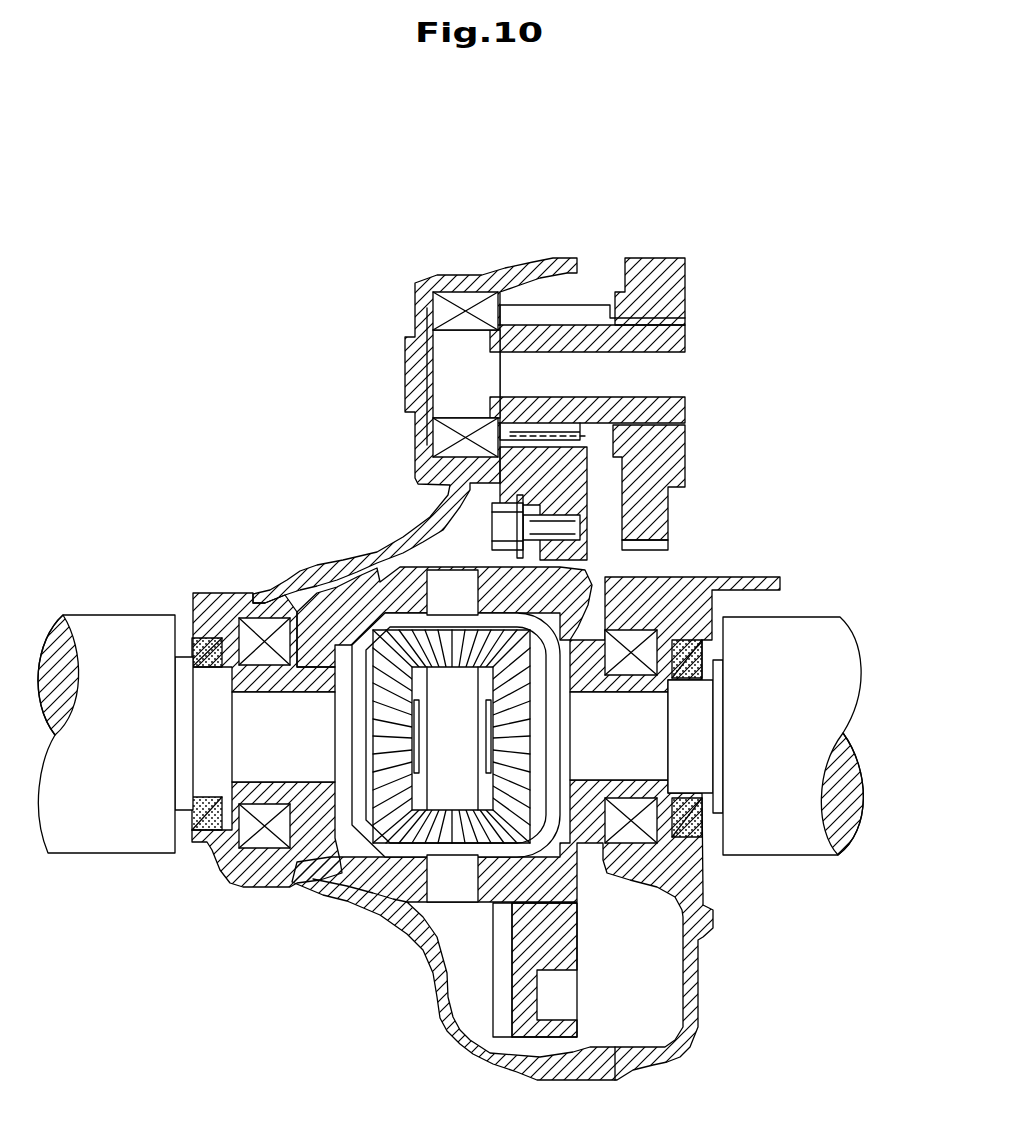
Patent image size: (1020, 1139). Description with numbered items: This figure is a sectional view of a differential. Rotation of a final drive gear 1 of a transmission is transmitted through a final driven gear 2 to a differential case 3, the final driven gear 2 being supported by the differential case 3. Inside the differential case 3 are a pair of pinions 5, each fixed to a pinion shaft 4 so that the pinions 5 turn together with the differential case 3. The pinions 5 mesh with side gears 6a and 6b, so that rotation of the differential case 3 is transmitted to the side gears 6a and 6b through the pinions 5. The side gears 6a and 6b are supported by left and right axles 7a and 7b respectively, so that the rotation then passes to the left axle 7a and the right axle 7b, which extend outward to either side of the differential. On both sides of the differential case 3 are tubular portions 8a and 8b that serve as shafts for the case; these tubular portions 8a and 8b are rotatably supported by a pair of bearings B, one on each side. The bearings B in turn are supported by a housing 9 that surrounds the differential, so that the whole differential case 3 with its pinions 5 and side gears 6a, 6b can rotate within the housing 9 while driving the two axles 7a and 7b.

The final drive gear 1 is at (543, 313).
The final driven gear 2 is at (410, 467).
The differential case 3 is at (400, 577).
The pinion shaft 4 is at (447, 888).
The pinion 5 is at (397, 620).
The side gear 6a is at (295, 850).
The side gear 6b is at (565, 835).
The left axle 7a is at (105, 630).
The right axle 7b is at (820, 630).
The tubular portion 8a is at (262, 677).
The tubular portion 8b is at (650, 650).
The housing 9 is at (443, 1013).
The bearing B is at (727, 567).